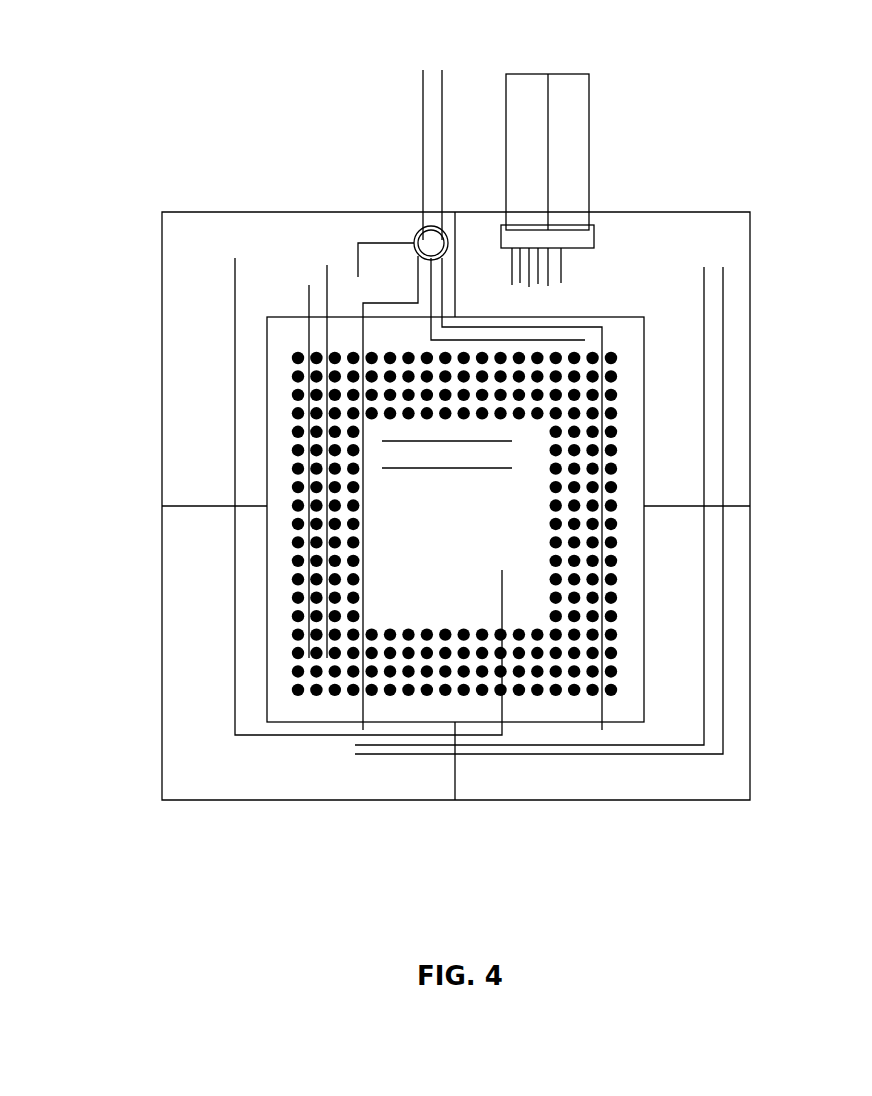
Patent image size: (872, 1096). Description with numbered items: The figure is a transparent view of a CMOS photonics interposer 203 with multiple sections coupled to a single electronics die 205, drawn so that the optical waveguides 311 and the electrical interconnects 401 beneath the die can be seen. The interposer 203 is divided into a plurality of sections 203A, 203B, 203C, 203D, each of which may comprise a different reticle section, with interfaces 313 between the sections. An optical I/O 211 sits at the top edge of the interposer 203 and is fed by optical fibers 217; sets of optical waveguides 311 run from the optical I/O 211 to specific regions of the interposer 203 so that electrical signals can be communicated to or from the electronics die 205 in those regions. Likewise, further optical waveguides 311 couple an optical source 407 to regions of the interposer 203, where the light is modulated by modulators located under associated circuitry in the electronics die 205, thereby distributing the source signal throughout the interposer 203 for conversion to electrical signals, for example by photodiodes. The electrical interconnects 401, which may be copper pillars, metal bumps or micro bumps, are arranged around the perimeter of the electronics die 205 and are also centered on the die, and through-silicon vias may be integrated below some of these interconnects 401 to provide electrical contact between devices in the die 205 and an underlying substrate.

The CMOS photonics interposer 203 is at (401, 481).
The section of the interposer 203A is at (230, 250).
The section of the interposer 203B is at (737, 240).
The section of the interposer 203C is at (245, 788).
The section of the interposer 203D is at (710, 788).
The electronics die 205 is at (375, 519).
The optical I/O 211 is at (600, 233).
The optical fibers 217 is at (568, 180).
The optical waveguides 311 is at (358, 262).
The interfaces 313 is at (188, 504).
The electrical interconnects 401 is at (297, 562).
The optical source 407 is at (423, 157).